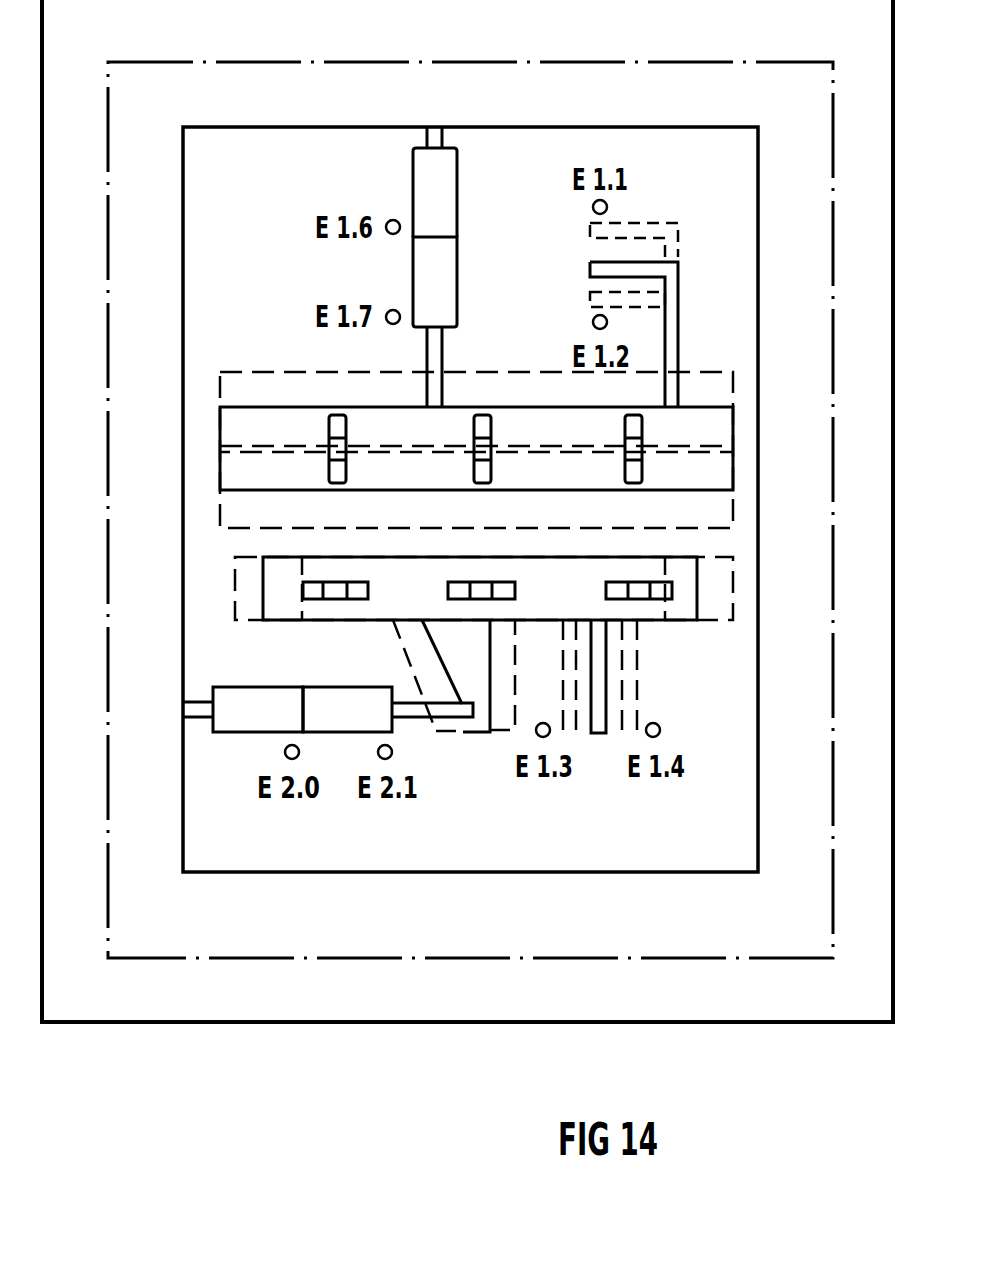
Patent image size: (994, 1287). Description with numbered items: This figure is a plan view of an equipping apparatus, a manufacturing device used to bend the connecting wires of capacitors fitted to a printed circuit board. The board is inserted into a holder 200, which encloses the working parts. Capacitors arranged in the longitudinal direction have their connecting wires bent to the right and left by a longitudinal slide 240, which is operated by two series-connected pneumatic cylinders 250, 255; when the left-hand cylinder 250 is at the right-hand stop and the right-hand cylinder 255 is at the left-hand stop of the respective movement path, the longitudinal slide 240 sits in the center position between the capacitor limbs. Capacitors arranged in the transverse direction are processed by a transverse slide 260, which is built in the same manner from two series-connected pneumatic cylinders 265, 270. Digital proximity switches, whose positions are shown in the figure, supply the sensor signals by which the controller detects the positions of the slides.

The holder 200 is at (398, 957).
The longitudinal slide 240 is at (282, 597).
The pneumatic cylinder 250 is at (237, 712).
The pneumatic cylinder 255 is at (330, 702).
The transverse slide 260 is at (271, 421).
The pneumatic cylinder 265 is at (442, 187).
The pneumatic cylinder 270 is at (438, 290).